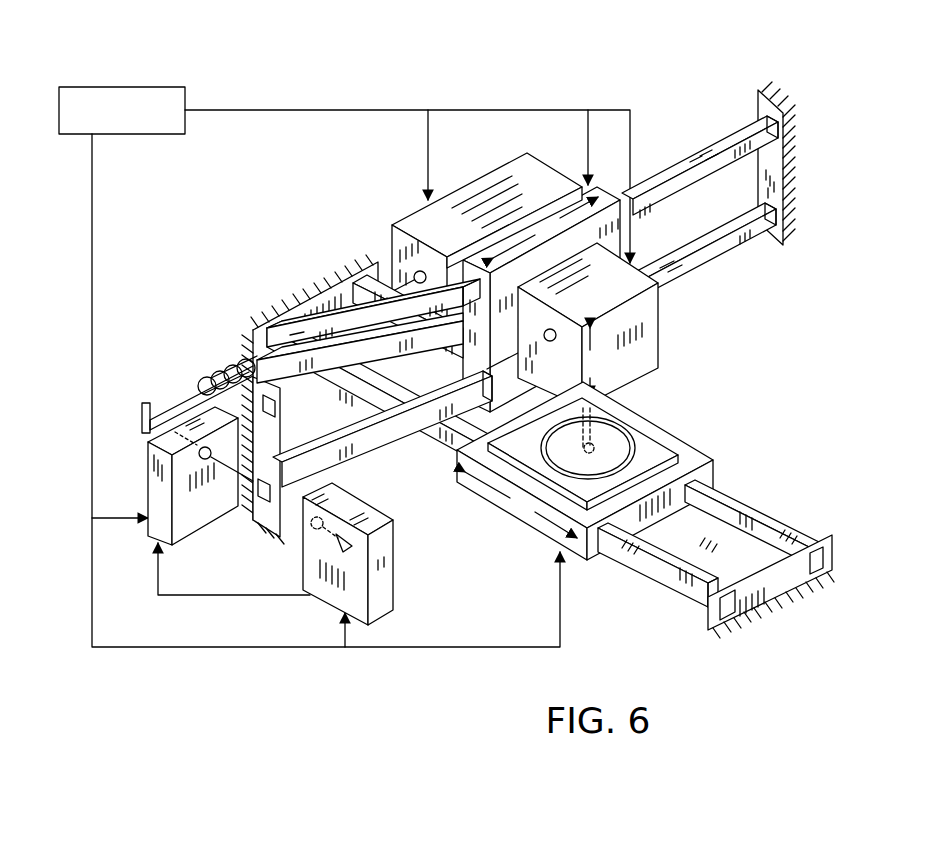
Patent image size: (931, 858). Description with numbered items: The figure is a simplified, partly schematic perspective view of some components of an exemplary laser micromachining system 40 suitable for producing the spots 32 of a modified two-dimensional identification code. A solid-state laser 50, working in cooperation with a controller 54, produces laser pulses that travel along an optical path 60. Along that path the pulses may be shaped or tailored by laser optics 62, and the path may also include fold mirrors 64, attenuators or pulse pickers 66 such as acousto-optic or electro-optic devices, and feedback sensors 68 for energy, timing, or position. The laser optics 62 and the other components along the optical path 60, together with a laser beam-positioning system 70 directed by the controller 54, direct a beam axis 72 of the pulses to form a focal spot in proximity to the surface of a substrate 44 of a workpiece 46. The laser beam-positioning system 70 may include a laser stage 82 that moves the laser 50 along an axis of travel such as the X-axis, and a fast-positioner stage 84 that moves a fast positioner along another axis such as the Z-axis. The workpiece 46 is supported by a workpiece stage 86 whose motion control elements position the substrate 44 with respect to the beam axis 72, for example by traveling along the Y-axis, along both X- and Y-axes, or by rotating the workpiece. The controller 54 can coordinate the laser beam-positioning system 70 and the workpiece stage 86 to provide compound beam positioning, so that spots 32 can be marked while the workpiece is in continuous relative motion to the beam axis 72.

The laser micromachining system 40 is at (218, 78).
The controller 54 is at (118, 87).
The laser 50 is at (513, 174).
The laser stage 82 is at (598, 183).
The laser beam-positioning system 70 is at (690, 154).
The fast-positioner stage 84 is at (646, 314).
The beam axis 72 is at (594, 413).
The workpiece 46 is at (638, 433).
The substrate 44 is at (563, 448).
The workpiece stage 86 is at (697, 460).
The spot 32 is at (596, 455).
The optical path 60 is at (158, 415).
The laser optics 62 is at (227, 370).
The fold mirrors 64 is at (262, 505).
The attenuators or pulse pickers 66 is at (158, 497).
The feedback sensors 68 is at (393, 560).